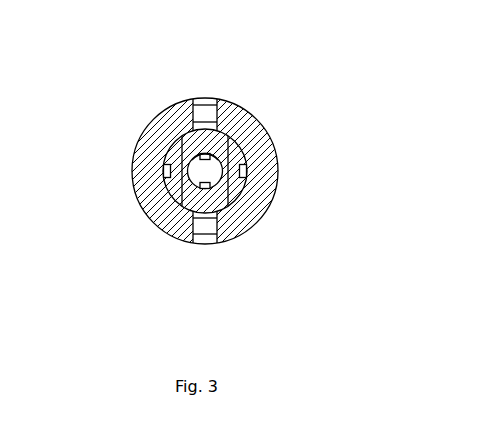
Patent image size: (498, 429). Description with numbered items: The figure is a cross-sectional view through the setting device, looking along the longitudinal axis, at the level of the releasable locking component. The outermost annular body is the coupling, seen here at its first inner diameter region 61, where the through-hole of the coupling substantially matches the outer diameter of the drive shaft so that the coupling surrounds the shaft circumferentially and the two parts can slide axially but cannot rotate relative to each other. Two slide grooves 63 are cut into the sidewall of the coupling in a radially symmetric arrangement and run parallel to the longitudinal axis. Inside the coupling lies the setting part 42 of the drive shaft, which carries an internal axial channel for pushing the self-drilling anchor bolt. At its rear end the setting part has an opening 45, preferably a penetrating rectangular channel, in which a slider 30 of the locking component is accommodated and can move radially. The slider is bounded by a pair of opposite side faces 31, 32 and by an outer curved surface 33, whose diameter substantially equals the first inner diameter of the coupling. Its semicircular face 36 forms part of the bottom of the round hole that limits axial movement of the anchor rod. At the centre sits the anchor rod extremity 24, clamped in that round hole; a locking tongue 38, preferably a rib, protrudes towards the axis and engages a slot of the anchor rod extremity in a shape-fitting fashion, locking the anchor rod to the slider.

The anchor rod extremity 24 is at (218, 170).
The slider 30 is at (263, 213).
The side face 31 is at (209, 153).
The side face 32 is at (230, 153).
The outer curved surface 33 is at (185, 222).
The semicircular face 36 is at (244, 165).
The locking tongue 38 is at (206, 153).
The setting part 42 is at (216, 185).
The opening 45 is at (166, 203).
The first inner diameter region 61 is at (250, 112).
The slide groove 63 is at (203, 101).